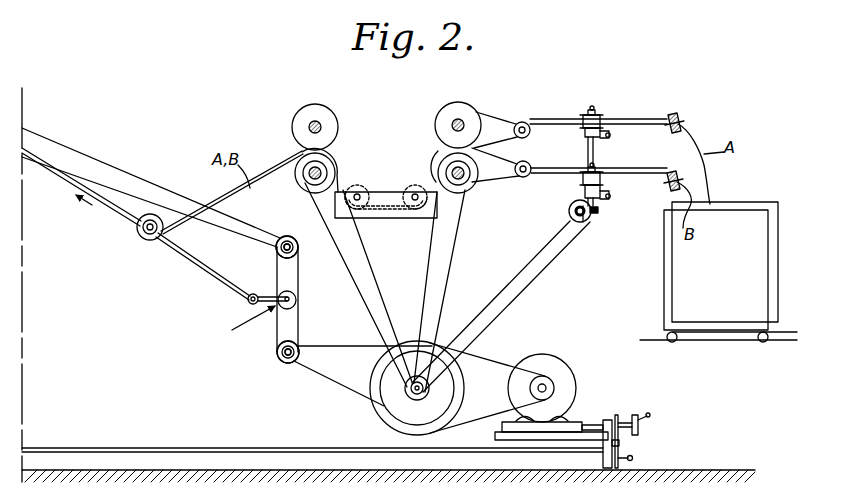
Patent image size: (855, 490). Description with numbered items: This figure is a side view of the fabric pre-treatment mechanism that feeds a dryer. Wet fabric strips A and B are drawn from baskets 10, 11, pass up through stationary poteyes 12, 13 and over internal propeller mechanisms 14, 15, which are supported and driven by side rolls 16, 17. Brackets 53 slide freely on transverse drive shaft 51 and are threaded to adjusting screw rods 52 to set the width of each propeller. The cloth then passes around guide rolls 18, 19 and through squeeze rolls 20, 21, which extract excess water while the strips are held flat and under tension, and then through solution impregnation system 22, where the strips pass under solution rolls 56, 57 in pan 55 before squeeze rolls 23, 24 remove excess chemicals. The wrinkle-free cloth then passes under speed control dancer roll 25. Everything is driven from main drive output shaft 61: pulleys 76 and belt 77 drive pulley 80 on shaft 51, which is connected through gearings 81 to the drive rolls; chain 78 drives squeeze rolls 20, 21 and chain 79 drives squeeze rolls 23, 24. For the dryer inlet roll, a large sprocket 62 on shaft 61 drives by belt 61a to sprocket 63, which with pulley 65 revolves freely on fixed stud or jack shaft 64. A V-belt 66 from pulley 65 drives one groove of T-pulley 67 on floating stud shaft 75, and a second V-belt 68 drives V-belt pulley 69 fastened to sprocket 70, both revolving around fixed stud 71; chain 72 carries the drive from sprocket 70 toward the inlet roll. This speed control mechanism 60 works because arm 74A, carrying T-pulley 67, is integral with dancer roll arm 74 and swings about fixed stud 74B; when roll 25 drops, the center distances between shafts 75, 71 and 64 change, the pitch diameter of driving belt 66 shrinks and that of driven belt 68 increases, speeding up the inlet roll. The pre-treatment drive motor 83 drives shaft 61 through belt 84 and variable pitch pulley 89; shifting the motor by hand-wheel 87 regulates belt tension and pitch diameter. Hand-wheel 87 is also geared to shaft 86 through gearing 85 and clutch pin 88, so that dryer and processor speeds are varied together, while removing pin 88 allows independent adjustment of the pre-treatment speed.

The basket 10 is at (752, 204).
The basket 11 is at (755, 252).
The stationary poteye 12 is at (678, 113).
The stationary poteye 13 is at (668, 192).
The internal propeller mechanism 14 is at (623, 118).
The internal propeller mechanism 15 is at (632, 170).
The side roll 16 is at (591, 108).
The side roll 17 is at (585, 178).
The guide roll 18 is at (525, 122).
The guide roll 19 is at (524, 179).
The squeeze roll 20 is at (466, 112).
The squeeze roll 21 is at (473, 187).
The solution impregnation system 22 is at (389, 188).
The squeeze roll 23 is at (322, 120).
The squeeze roll 24 is at (301, 186).
The speed control dancer roll 25 is at (143, 238).
The transverse drive shaft 51 is at (584, 222).
The adjusting screw rod 52 is at (610, 138).
The supporting bracket 53 is at (612, 198).
The pan 55 is at (405, 213).
The solution roll 56 is at (415, 192).
The solution roll 57 is at (356, 193).
The speed control mechanism 60 is at (240, 325).
The main drive output shaft 61 is at (415, 393).
The belt 61a is at (338, 386).
The large sprocket 62 is at (381, 377).
The sprocket 63 is at (288, 364).
The jack shaft 64 is at (280, 360).
The pulley 65 is at (277, 352).
The V-belt 66 is at (300, 327).
The T-pulley 67 is at (296, 303).
The V-belt 68 is at (300, 268).
The V-belt pulley 69 is at (303, 236).
The sprocket 70 is at (282, 238).
The fixed stud 71 is at (299, 248).
The chain 72 is at (137, 175).
The dancer roll arm 74 is at (198, 270).
The arm 74A is at (272, 296).
The fixed stud 74B is at (249, 301).
The floating stud shaft 75 is at (290, 297).
The pulley 76 is at (424, 393).
The belt 77 is at (528, 288).
The chain 78 is at (457, 254).
The chain 79 is at (375, 272).
The pulley 80 is at (569, 214).
The gearing 81 is at (600, 219).
The pre-treatment drive motor 83 is at (560, 372).
The belt 84 is at (500, 362).
The gearing 85 is at (636, 445).
The shaft 86 is at (194, 447).
The hand-wheel 87 is at (649, 412).
The clutch pin 88 is at (633, 458).
The variable pitch pulley 89 is at (461, 372).